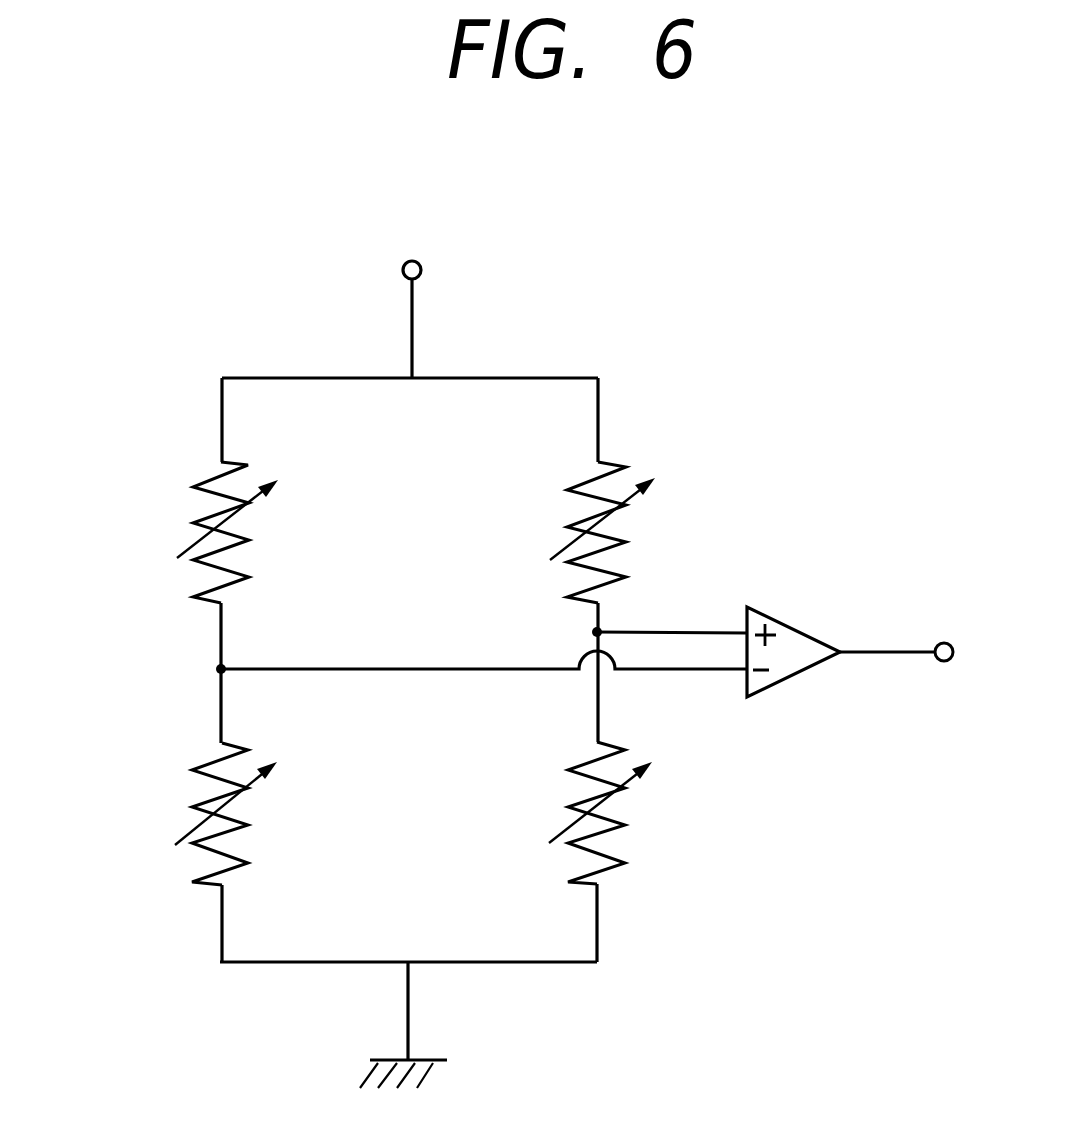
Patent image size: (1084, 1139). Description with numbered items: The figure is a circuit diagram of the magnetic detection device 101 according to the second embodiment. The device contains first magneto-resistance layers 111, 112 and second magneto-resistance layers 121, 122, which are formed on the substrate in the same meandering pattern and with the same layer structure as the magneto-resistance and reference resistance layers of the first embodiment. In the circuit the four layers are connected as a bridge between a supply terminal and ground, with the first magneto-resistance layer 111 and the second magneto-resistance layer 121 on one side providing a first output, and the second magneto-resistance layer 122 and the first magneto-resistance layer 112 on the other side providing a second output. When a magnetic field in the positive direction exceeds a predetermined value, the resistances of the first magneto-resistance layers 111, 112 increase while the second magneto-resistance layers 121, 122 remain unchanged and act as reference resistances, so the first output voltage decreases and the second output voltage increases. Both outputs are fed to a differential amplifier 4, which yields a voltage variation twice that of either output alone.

The magnetic detection device 101 is at (580, 302).
The first magneto-resistance layer 111 is at (635, 524).
The first magneto-resistance layer 112 is at (185, 862).
The second magneto-resistance layer 121 is at (632, 817).
The second magneto-resistance layer 122 is at (207, 506).
The differential amplifier 4 is at (803, 643).